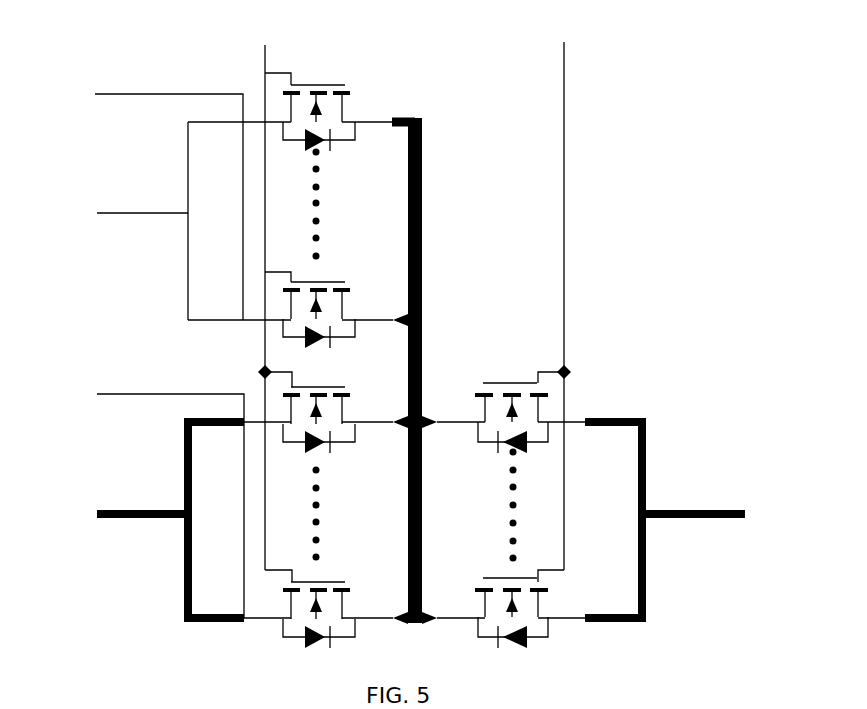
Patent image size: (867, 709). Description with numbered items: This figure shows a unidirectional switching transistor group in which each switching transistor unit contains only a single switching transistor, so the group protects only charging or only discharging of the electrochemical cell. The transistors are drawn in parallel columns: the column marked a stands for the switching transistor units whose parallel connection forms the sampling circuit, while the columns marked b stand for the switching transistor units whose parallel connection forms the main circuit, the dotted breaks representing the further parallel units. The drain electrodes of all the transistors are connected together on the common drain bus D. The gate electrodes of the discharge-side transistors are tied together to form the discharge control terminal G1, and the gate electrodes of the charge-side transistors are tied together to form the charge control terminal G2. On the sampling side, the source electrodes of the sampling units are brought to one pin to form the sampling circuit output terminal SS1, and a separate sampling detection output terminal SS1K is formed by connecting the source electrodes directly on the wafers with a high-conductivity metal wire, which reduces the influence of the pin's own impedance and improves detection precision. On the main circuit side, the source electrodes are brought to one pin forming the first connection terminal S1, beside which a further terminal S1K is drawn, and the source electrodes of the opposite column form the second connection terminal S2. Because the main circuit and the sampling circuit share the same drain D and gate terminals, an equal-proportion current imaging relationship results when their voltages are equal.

The common drain electrode terminal D is at (414, 358).
The discharge control terminal G1 is at (287, 311).
The charge control terminal G2 is at (541, 310).
The sampling detection output terminal SS1K is at (141, 202).
The sampling circuit output terminal SS1 is at (174, 221).
The first source control line S1K is at (148, 501).
The first connection terminal S1 is at (175, 520).
The second connection terminal S2 is at (609, 520).
The first transistor group a is at (338, 216).
The second transistor group b is at (415, 515).